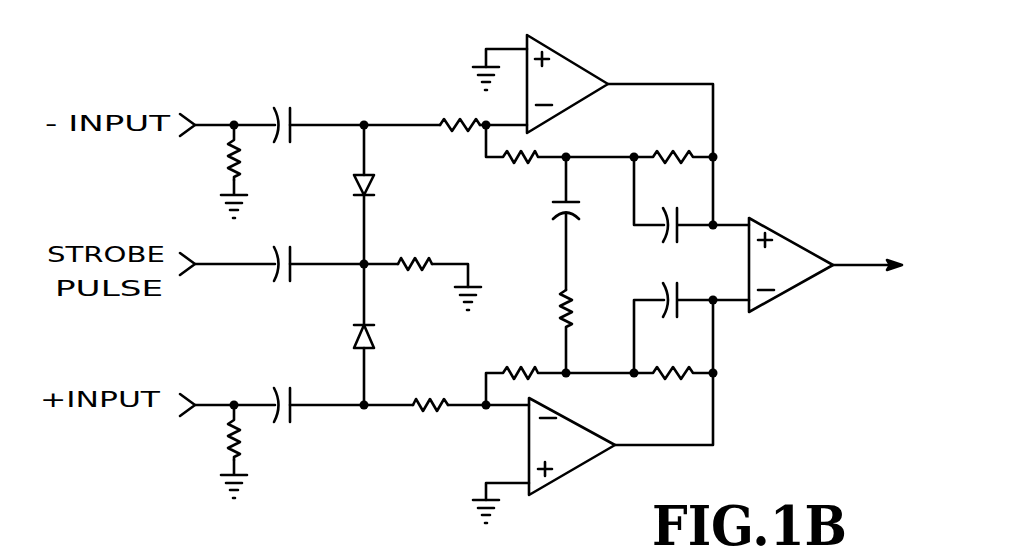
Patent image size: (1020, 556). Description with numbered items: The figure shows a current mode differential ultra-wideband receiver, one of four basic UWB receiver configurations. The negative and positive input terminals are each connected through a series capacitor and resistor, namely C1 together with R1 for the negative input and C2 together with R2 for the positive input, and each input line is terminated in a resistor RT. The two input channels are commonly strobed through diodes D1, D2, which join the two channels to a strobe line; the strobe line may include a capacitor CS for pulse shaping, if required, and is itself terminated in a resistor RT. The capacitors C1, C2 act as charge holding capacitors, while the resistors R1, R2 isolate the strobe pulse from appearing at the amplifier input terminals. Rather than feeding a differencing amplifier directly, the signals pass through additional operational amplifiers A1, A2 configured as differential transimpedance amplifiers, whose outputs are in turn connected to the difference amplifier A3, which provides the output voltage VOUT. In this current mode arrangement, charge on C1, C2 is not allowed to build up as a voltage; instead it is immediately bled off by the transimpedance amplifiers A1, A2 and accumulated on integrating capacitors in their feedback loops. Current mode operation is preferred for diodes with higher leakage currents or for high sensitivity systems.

The series capacitor C1 is at (297, 115).
The series capacitor C2 is at (295, 427).
The strobe capacitor CS is at (284, 286).
The strobe diode D1 is at (385, 190).
The strobe diode D2 is at (388, 341).
The series resistor R1 is at (446, 109).
The series resistor R2 is at (429, 429).
The terminating resistor RT is at (313, 292).
The operational amplifier A1 is at (567, 84).
The operational amplifier A2 is at (572, 446).
The difference amplifier A3 is at (791, 265).
The output voltage VOUT is at (867, 284).